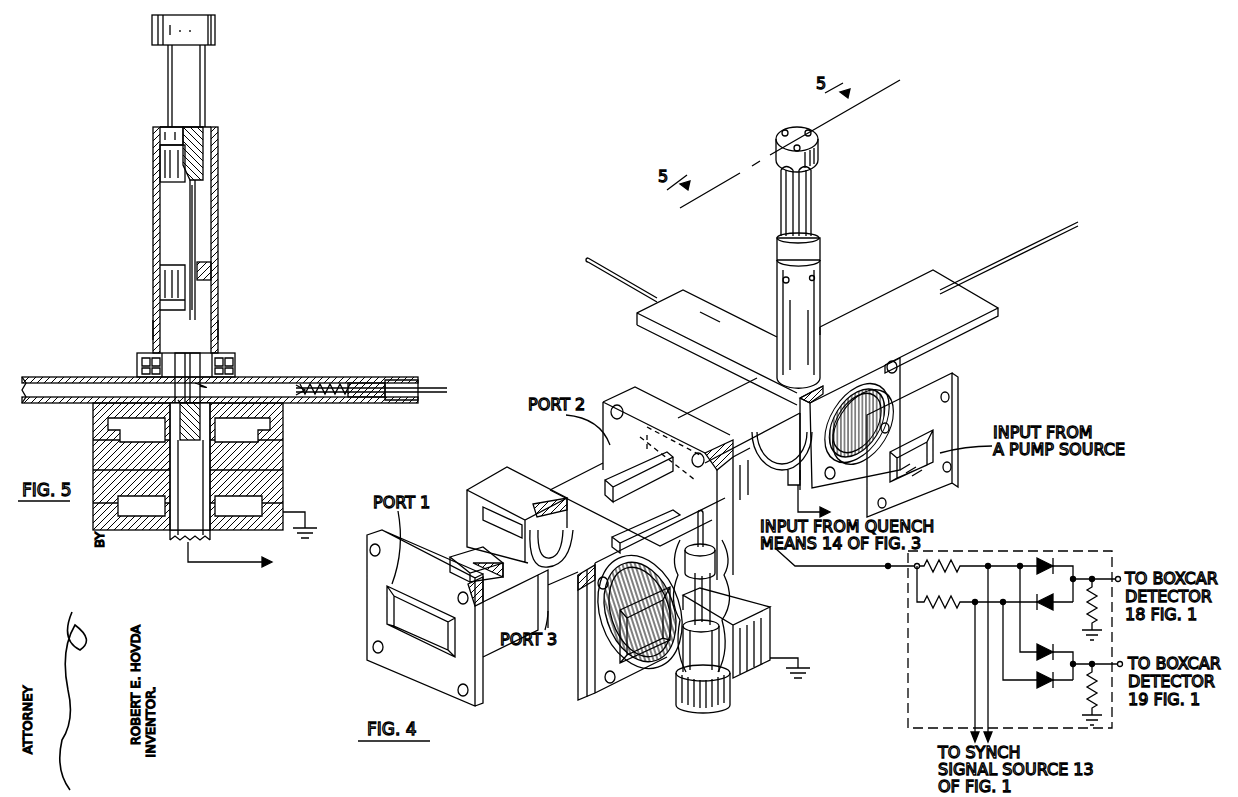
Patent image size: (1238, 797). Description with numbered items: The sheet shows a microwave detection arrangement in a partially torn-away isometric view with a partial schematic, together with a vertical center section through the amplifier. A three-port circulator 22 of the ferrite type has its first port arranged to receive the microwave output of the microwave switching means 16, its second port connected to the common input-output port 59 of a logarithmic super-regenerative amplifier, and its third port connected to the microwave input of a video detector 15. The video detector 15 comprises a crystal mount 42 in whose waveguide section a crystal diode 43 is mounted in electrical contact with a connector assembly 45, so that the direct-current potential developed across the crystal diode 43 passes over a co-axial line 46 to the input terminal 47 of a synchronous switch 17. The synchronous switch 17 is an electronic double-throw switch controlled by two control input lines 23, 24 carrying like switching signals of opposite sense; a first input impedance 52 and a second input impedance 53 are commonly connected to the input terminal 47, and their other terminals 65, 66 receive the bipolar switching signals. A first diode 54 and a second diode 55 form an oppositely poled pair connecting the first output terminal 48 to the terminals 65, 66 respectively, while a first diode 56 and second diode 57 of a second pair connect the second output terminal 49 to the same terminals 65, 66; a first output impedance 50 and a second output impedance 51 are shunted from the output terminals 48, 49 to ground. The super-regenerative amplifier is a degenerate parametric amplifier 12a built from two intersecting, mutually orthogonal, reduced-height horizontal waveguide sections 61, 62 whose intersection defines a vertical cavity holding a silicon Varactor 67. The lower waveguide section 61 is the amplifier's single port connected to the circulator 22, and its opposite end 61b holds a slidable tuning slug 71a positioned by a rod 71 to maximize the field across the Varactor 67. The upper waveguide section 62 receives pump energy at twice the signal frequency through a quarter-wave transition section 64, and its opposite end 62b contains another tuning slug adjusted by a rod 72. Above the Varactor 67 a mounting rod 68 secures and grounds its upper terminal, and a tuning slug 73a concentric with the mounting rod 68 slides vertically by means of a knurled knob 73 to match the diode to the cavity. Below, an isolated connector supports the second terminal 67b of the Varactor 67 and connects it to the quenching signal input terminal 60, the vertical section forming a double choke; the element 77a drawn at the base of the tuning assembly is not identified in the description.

In FIG. 5, the degenerate parametric amplifier 12a is at (255, 323).
In FIG. 4, the degenerate parametric amplifier 12a is at (855, 288).
In FIG. 4, the video detector 15 is at (750, 620).
In FIG. 4, the microwave switching means 16 is at (431, 621).
In FIG. 4, the synchronous switch 17 is at (1088, 550).
In FIG. 4, the three-port circulator 22 is at (578, 463).
In FIG. 4, the control input line 23 is at (974, 693).
In FIG. 4, the control input line 24 is at (986, 670).
In FIG. 4, the crystal mount 42 is at (728, 686).
In FIG. 4, the crystal diode 43 is at (683, 705).
In FIG. 4, the connector assembly 45 is at (718, 565).
In FIG. 4, the co-axial line 46 is at (862, 570).
In FIG. 4, the input terminal 47 is at (888, 570).
In FIG. 4, the first output terminal 48 is at (1120, 576).
In FIG. 4, the second output terminal 49 is at (1115, 659).
In FIG. 4, the first output impedance 50 is at (1082, 609).
In FIG. 4, the second output impedance 51 is at (1088, 694).
In FIG. 4, the first input impedance 52 is at (978, 578).
In FIG. 4, the second input impedance 53 is at (948, 604).
In FIG. 4, the first diode 54 is at (1045, 559).
In FIG. 4, the second diode 55 is at (1037, 591).
In FIG. 4, the first diode 56 is at (1046, 623).
In FIG. 4, the second diode 57 is at (1042, 685).
In FIG. 4, the common input-output port 59 is at (652, 444).
In FIG. 5, the quenching signal input terminal 60 is at (248, 566).
In FIG. 4, the quenching signal input terminal 60 is at (814, 501).
In FIG. 5, the waveguide section 61 is at (305, 377).
In FIG. 4, the waveguide section 61 is at (757, 428).
In FIG. 4, the opposite end of waveguide section 61b is at (977, 323).
In FIG. 4, the waveguide section 62 is at (762, 348).
In FIG. 4, the opposite end of waveguide section 62b is at (720, 316).
In FIG. 4, the quarter-wave transition section 64 is at (938, 383).
In FIG. 4, the other terminal of first input impedance 65 is at (990, 568).
In FIG. 4, the other terminal of second input impedance 66 is at (972, 606).
In FIG. 5, the silicon Varactor 67 is at (200, 384).
In FIG. 5, the second terminal of Varactor 67b is at (178, 400).
In FIG. 5, the mounting rod 68 is at (190, 223).
In FIG. 5, the rod 71 is at (435, 386).
In FIG. 4, the rod 71 is at (1053, 256).
In FIG. 5, the tuning slug 71a is at (305, 398).
In FIG. 4, the rod 72 is at (625, 277).
In FIG. 5, the knurled knob 73 is at (205, 28).
In FIG. 4, the knurled knob 73 is at (818, 144).
In FIG. 5, the tuning slug 73a is at (211, 268).
In FIG. 5, the bearing housing 77a is at (142, 355).